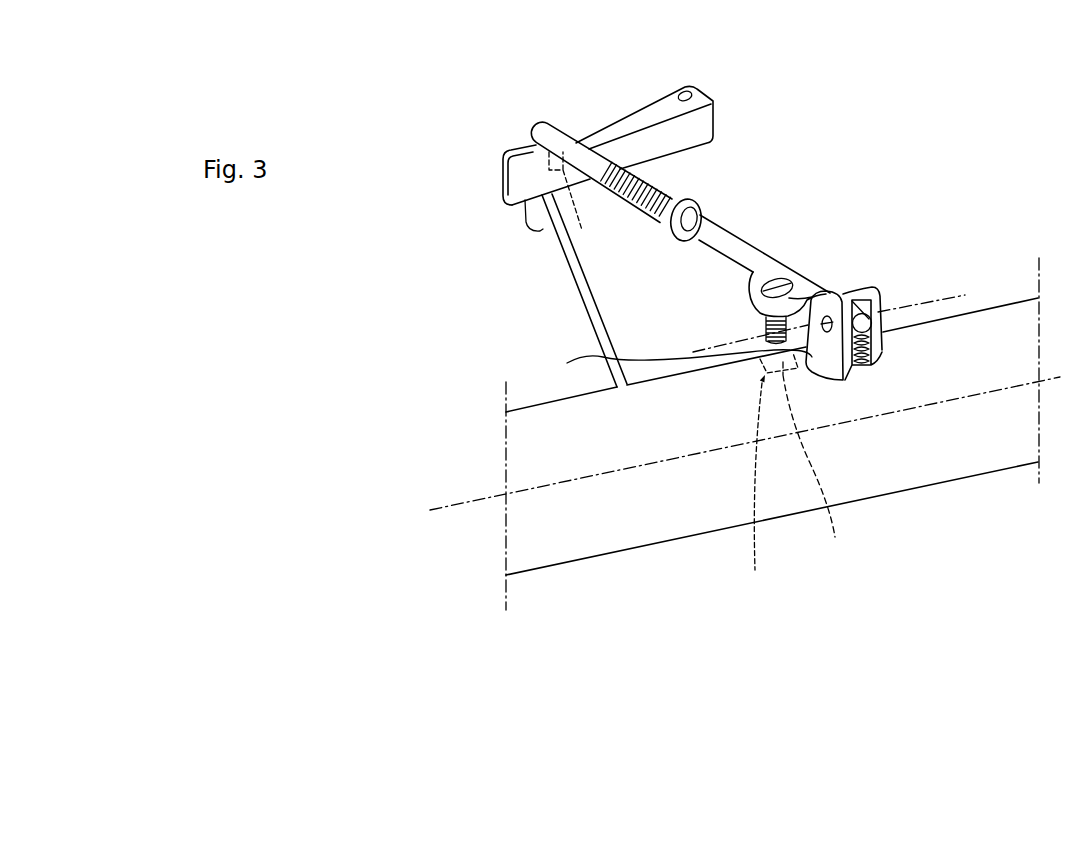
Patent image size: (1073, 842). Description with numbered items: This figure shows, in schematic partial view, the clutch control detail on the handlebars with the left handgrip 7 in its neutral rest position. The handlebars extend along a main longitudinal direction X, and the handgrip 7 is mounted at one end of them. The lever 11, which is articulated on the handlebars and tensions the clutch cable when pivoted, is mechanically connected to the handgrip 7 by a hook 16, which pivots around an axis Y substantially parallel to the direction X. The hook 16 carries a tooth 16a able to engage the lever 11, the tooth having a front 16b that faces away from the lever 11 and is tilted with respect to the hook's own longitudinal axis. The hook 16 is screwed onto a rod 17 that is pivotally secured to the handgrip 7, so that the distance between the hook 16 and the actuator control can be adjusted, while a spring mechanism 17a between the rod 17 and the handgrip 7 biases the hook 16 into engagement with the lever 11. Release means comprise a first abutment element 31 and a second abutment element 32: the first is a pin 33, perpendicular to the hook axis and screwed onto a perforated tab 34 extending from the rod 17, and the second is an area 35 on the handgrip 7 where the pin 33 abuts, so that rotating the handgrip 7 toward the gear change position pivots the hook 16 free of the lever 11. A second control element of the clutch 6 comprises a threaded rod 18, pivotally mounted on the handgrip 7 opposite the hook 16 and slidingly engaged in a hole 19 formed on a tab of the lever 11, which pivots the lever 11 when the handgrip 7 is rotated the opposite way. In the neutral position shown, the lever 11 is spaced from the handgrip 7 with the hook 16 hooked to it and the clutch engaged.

The left handgrip 7 is at (564, 565).
The lever 11 is at (659, 97).
The hook 16 is at (580, 143).
The tooth 16a is at (576, 202).
The front 16b is at (513, 147).
The hole 19 is at (520, 222).
The threaded rod 18 is at (576, 286).
The second control element of the clutch 6 is at (546, 249).
The rod 17 is at (752, 244).
The spring mechanism 17a is at (882, 350).
The perforated tab 34 is at (750, 288).
The first abutment element 31 is at (747, 326).
The pin 33 is at (680, 367).
The second abutment element 32 is at (774, 475).
The area 35 is at (818, 465).
The main longitudinal direction X is at (630, 468).
The pivot axis Y is at (925, 300).